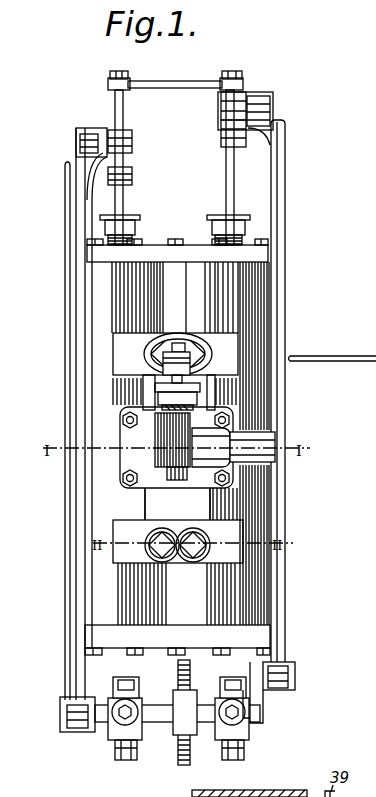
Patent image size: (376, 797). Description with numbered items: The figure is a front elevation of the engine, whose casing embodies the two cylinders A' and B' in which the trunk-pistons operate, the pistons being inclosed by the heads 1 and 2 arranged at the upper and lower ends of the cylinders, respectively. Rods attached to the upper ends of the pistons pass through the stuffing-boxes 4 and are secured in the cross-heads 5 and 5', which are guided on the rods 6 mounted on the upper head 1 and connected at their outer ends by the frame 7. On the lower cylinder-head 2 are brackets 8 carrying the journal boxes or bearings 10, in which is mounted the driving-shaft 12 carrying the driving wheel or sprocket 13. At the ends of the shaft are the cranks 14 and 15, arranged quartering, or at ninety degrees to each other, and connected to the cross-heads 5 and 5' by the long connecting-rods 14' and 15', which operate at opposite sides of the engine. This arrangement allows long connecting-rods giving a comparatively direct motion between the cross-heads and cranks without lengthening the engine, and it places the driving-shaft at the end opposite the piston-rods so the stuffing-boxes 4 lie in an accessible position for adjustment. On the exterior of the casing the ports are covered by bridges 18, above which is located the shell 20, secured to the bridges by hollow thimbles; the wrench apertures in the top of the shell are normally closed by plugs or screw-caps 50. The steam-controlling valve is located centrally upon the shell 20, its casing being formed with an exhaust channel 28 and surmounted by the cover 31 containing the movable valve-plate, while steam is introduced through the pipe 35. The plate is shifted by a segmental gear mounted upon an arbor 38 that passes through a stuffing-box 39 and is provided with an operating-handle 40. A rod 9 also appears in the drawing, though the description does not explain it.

The head 1 is at (270, 252).
The head 2 is at (192, 642).
The stuffing-box 4 is at (132, 220).
The cross-head 5 is at (129, 157).
The cross-head 5' is at (219, 125).
The rod 6 is at (123, 200).
The frame 7 is at (175, 88).
The bracket 8 is at (179, 685).
The rod 9 is at (340, 358).
The journal box 10 is at (125, 718).
The driving-shaft 12 is at (177, 714).
The driving wheel 13 is at (183, 753).
The crank 14 is at (66, 722).
The connecting-rod 14' is at (51, 431).
The crank 15 is at (284, 692).
The connecting-rod 15' is at (285, 391).
The bridge 18 is at (127, 527).
The shell 20 is at (177, 504).
The exhaust passage 28 is at (275, 467).
The cover 31 is at (240, 790).
The pipe 35 is at (247, 443).
The arbor 38 is at (173, 380).
The stuffing-box 39 is at (167, 397).
The operating-handle 40 is at (172, 357).
The screw-cap 50 is at (162, 530).
The cylinder A' is at (135, 443).
The cylinder B' is at (227, 443).